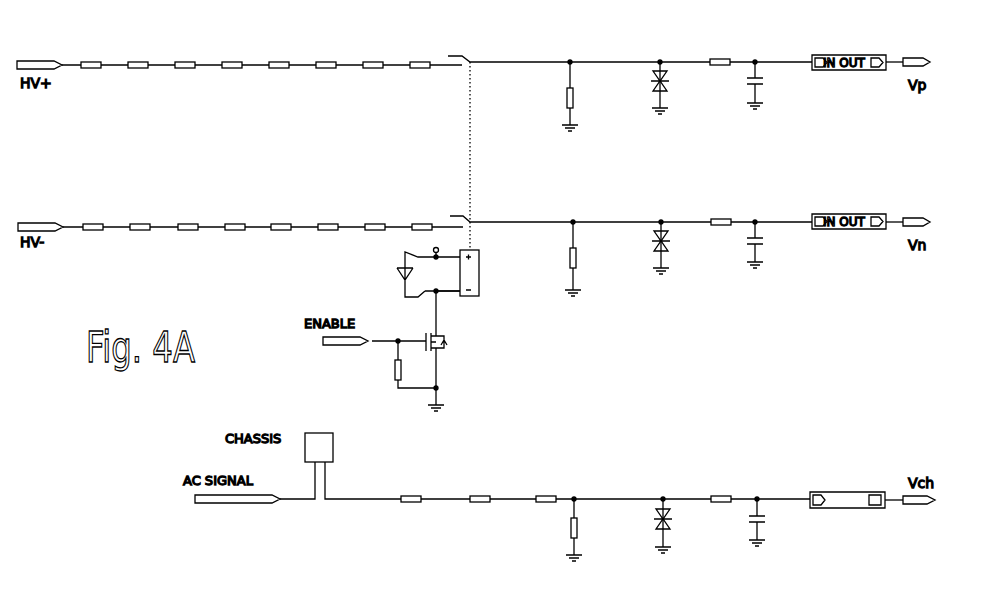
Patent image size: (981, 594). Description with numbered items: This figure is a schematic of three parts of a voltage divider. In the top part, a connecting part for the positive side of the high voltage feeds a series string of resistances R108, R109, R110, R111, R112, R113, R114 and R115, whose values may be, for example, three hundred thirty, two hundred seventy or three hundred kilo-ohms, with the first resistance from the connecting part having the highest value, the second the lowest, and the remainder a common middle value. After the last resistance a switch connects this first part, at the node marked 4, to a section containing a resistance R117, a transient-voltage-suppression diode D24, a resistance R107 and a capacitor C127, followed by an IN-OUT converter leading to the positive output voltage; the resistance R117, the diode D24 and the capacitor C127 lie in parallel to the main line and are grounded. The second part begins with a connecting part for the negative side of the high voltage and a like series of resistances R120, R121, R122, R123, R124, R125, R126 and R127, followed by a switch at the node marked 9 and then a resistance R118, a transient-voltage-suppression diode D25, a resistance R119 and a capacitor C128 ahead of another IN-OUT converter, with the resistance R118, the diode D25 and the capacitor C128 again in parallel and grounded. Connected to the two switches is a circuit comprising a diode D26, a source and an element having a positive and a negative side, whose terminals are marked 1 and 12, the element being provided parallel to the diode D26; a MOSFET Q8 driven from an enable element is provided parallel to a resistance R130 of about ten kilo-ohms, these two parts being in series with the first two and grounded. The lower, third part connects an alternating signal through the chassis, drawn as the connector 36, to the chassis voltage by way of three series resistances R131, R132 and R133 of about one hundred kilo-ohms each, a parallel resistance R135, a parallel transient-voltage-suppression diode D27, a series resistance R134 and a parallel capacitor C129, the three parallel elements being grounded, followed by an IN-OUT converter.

The resistance R108 is at (90, 53).
The resistance R109 is at (137, 53).
The resistance R110 is at (184, 53).
The resistance R111 is at (232, 53).
The resistance R112 is at (279, 53).
The resistance R113 is at (326, 53).
The resistance R114 is at (373, 53).
The resistance R115 is at (420, 53).
The positive high-voltage net node 4 is at (630, 53).
The resistance R117 is at (588, 95).
The transient-voltage-suppression diode D24 is at (642, 87).
The resistance R107 is at (719, 51).
The capacitor C127 is at (775, 84).
The resistance R120 is at (91, 217).
The resistance R121 is at (139, 217).
The resistance R122 is at (187, 217).
The resistance R123 is at (233, 217).
The resistance R124 is at (279, 217).
The resistance R125 is at (326, 217).
The resistance R126 is at (373, 217).
The resistance R127 is at (420, 217).
The negative high-voltage net node 9 is at (631, 213).
The resistance R118 is at (554, 258).
The transient-voltage-suppression diode D25 is at (644, 247).
The resistance R119 is at (719, 212).
The capacitor C128 is at (775, 244).
The diode D26 is at (397, 274).
The connector pin 1 is at (443, 248).
The connector pin 12 is at (448, 282).
The MOSFET Q8 is at (449, 339).
The resistance R130 is at (394, 363).
The chassis connector 36 is at (319, 437).
The resistance R131 is at (415, 487).
The resistance R132 is at (479, 487).
The resistance R133 is at (544, 487).
The resistance R135 is at (554, 529).
The transient-voltage-suppression diode D27 is at (646, 525).
The resistance R134 is at (720, 487).
The capacitor C129 is at (776, 521).